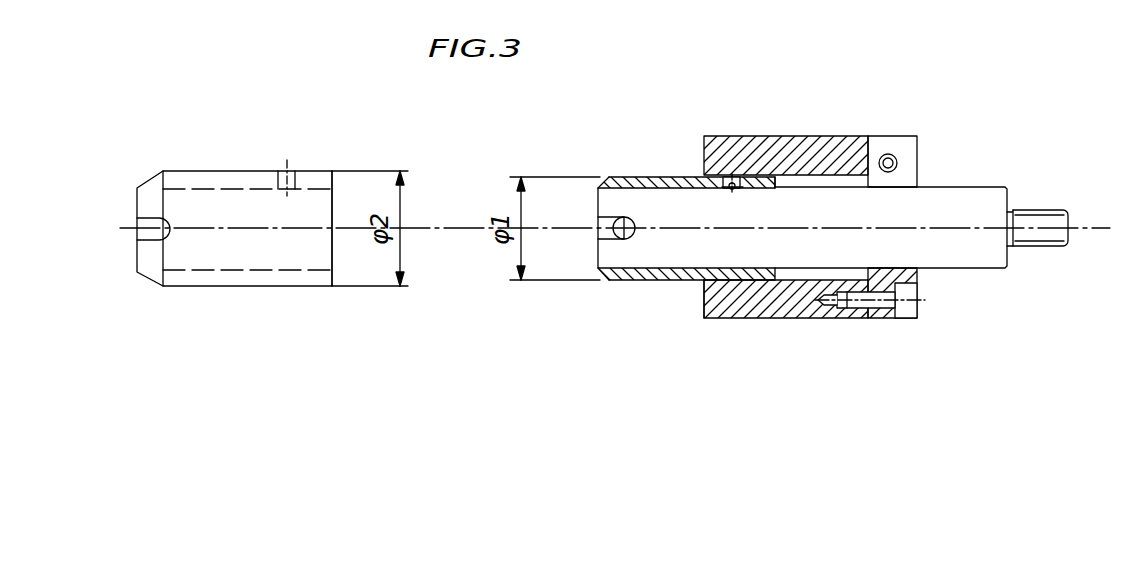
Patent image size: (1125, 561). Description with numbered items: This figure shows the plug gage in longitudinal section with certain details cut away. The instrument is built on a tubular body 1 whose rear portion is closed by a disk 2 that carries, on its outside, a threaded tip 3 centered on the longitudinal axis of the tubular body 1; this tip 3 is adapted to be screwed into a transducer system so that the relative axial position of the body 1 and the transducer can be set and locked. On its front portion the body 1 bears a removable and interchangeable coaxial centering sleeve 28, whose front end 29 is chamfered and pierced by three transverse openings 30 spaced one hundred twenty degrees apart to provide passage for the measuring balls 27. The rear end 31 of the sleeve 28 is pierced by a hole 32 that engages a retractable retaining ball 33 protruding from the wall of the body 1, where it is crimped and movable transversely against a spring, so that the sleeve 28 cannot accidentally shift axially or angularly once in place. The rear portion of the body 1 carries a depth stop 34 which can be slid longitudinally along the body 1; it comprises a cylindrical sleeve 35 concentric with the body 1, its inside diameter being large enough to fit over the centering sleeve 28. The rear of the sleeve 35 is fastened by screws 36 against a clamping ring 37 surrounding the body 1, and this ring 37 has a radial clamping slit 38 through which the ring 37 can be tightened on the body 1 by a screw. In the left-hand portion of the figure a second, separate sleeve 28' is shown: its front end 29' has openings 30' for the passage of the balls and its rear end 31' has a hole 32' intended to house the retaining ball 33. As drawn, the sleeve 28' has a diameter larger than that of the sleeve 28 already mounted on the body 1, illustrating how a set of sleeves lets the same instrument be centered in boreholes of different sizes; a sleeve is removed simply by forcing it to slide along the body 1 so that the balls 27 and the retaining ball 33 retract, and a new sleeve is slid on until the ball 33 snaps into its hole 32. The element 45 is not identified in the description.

The tubular body 1 is at (975, 193).
The disk 2 is at (1013, 198).
The threaded tip 3 is at (1050, 212).
The balls 27 is at (632, 236).
The centering sleeve 28 is at (682, 257).
The centering sleeve 28' is at (247, 201).
The front end 29 is at (619, 207).
The front end 29' is at (162, 203).
The transverse openings 30 is at (648, 216).
The openings 30' is at (180, 219).
The rear end 31 is at (781, 199).
The rear end 31' is at (352, 228).
The hole 32 is at (718, 126).
The hole 32' is at (312, 160).
The retractable retaining ball 33 is at (733, 189).
The depth stop 34 is at (752, 333).
The cylindrical sleeve 35 is at (792, 142).
The screws 36 is at (868, 314).
The clamping ring 37 is at (916, 273).
The radial clamping slit 38 is at (907, 148).
The housing end face 45 is at (702, 306).